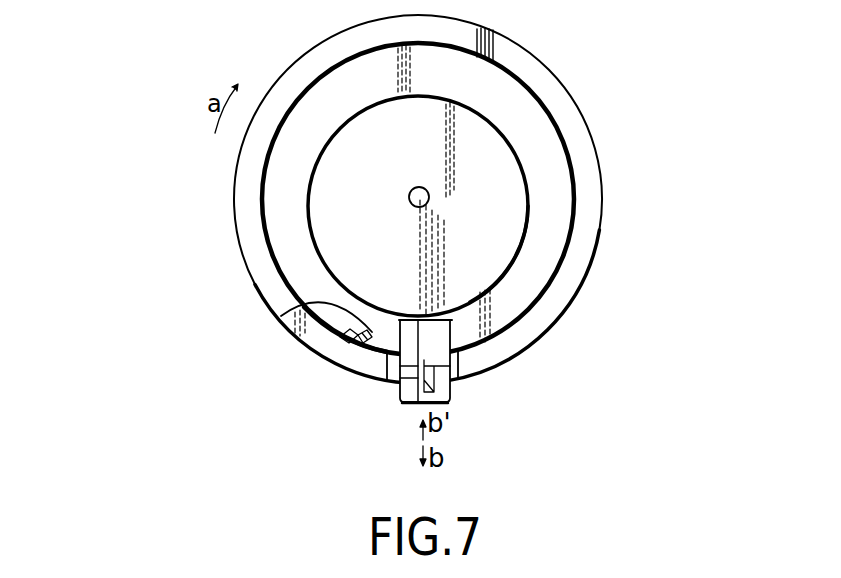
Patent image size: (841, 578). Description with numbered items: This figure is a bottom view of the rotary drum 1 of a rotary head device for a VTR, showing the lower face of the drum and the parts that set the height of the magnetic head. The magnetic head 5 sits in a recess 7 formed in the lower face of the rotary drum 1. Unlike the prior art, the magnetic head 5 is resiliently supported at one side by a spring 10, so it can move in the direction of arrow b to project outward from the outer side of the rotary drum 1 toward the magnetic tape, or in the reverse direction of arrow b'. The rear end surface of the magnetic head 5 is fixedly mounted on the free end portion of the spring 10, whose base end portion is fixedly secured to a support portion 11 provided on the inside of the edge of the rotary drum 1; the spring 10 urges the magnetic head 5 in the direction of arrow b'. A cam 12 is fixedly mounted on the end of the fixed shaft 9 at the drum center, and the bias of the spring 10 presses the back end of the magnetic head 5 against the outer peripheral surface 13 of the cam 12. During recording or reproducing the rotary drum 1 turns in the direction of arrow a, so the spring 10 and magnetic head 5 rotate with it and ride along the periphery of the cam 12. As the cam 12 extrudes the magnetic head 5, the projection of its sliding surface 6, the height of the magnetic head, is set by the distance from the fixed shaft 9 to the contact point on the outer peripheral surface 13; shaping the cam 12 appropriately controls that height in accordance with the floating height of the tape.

The rotary drum 1 is at (603, 223).
The magnetic head 5 is at (452, 396).
The sliding surface 6 is at (404, 405).
The recess 7 is at (394, 386).
The fixed shaft 9 is at (411, 191).
The spring 10 is at (281, 316).
The support portion 11 is at (317, 352).
The cam 12 is at (500, 150).
The outer peripheral surface 13 is at (523, 242).